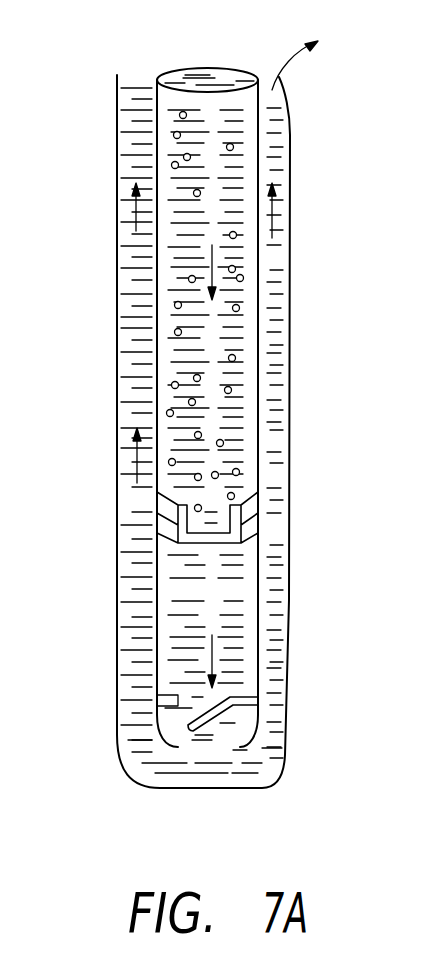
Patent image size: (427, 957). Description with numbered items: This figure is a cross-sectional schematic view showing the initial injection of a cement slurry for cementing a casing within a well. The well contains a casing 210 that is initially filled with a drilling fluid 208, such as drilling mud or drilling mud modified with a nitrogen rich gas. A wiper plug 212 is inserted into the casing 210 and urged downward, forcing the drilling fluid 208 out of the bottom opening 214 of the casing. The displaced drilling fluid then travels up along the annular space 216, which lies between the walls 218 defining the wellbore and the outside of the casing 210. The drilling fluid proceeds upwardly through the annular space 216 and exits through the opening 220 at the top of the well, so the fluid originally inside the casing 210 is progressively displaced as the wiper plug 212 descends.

The opening 220 is at (263, 82).
The walls 218 is at (292, 131).
The casing 210 is at (258, 327).
The drilling fluid 208 is at (239, 412).
The annular space 216 is at (150, 511).
The wiper plug 212 is at (245, 534).
The bottom opening 214 is at (212, 747).